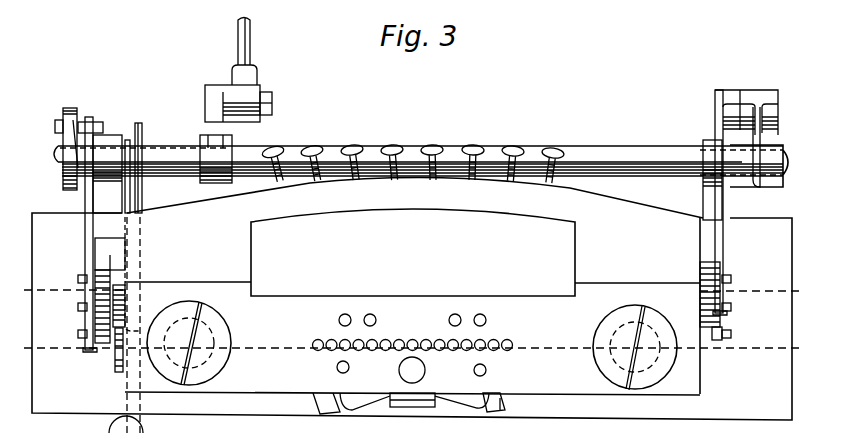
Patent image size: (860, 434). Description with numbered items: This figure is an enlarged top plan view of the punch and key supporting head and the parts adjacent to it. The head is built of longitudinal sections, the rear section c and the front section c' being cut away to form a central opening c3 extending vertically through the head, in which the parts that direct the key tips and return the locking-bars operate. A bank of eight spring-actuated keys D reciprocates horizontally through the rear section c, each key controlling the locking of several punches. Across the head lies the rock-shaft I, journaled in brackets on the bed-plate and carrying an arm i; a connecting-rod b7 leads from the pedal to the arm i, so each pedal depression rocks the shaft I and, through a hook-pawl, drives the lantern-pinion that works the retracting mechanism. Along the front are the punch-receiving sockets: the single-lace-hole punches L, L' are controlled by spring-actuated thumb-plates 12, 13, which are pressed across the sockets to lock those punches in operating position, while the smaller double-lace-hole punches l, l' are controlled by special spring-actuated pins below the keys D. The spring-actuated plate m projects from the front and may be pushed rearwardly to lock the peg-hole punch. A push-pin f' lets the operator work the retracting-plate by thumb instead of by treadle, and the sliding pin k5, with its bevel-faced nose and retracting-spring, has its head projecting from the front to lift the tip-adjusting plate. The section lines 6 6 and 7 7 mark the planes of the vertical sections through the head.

The connecting-rod b7 is at (253, 52).
The arm i is at (213, 116).
The rock-shaft I is at (300, 147).
The keys D is at (560, 147).
The section line 7 7 is at (410, 291).
The section line 6 6 is at (409, 349).
The central opening c3 is at (413, 252).
The rear section c is at (412, 299).
The front section c' is at (412, 348).
The double-lace-hole punch l is at (347, 315).
The double-lace-hole punch l' is at (482, 313).
The single-lace-hole punch L is at (359, 370).
The single-lace-hole punch L' is at (501, 372).
The push-pin f' is at (309, 405).
The thumb-plate 12 is at (348, 404).
The spring-actuated plate m is at (408, 400).
The thumb-plate 13 is at (477, 397).
The sliding pin k5 is at (563, 404).